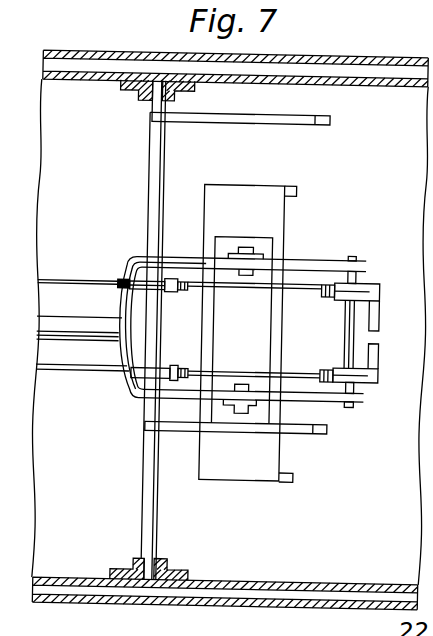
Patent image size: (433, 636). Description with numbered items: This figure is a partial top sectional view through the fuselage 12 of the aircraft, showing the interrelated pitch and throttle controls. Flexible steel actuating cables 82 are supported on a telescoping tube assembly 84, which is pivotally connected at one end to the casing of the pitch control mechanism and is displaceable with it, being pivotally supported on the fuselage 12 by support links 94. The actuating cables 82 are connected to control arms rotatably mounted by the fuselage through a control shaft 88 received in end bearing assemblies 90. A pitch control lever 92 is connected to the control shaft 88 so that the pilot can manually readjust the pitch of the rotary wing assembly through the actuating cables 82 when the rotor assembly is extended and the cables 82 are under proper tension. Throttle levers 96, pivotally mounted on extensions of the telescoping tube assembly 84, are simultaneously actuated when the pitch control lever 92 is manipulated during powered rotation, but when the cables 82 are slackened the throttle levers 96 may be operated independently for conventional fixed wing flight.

The fuselage 12 is at (313, 54).
The flexible steel cables 82 is at (66, 375).
The telescoping tube assembly 84 is at (88, 333).
The control shaft 88 is at (149, 179).
The end bearing assemblies 90 is at (122, 91).
The pitch control lever 92 is at (244, 118).
The support links 94 is at (232, 403).
The throttle levers 96 is at (381, 360).